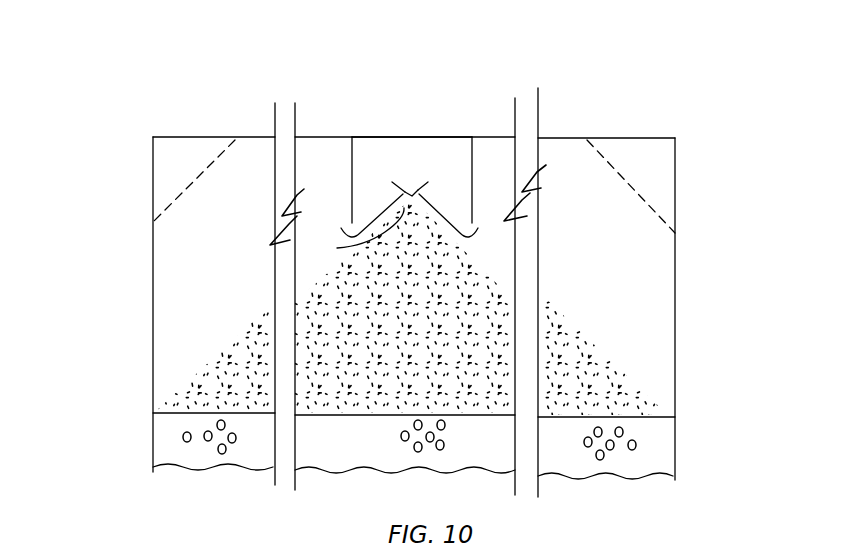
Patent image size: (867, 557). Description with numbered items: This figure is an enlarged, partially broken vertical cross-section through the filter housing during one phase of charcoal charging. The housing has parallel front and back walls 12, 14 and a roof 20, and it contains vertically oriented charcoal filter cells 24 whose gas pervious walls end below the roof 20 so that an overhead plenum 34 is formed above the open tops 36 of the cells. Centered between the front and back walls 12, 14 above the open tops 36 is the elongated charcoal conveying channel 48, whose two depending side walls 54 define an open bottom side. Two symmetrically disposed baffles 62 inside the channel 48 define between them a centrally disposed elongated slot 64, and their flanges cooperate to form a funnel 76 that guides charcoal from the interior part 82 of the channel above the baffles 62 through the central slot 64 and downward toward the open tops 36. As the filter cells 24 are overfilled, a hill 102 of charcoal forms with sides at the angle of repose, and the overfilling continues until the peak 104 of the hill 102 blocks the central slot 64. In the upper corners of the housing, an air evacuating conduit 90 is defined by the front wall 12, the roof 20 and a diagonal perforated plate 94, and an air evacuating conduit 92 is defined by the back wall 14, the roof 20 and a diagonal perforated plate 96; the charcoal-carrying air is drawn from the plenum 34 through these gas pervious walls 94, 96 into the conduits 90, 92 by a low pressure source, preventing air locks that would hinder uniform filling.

The front wall 12 is at (153, 293).
The back wall 14 is at (673, 295).
The roof 20 is at (320, 135).
The charcoal filter cell 24 is at (650, 443).
The overhead plenum 34 is at (607, 253).
The open top 36 is at (570, 415).
The gas treating material conveying channel 48 is at (462, 143).
The channel side wall 54 is at (352, 178).
The baffle 62 is at (372, 217).
The centrally disposed elongated slot 64 is at (413, 198).
The funnel 76 is at (412, 193).
The channel interior part 82 is at (416, 162).
The air evacuating conduit 90 is at (187, 145).
The air evacuating conduit 92 is at (637, 150).
The perforated plate 94 is at (190, 182).
The perforated plate 96 is at (642, 197).
The hill of charcoal 102 is at (422, 367).
The peak 104 is at (353, 232).